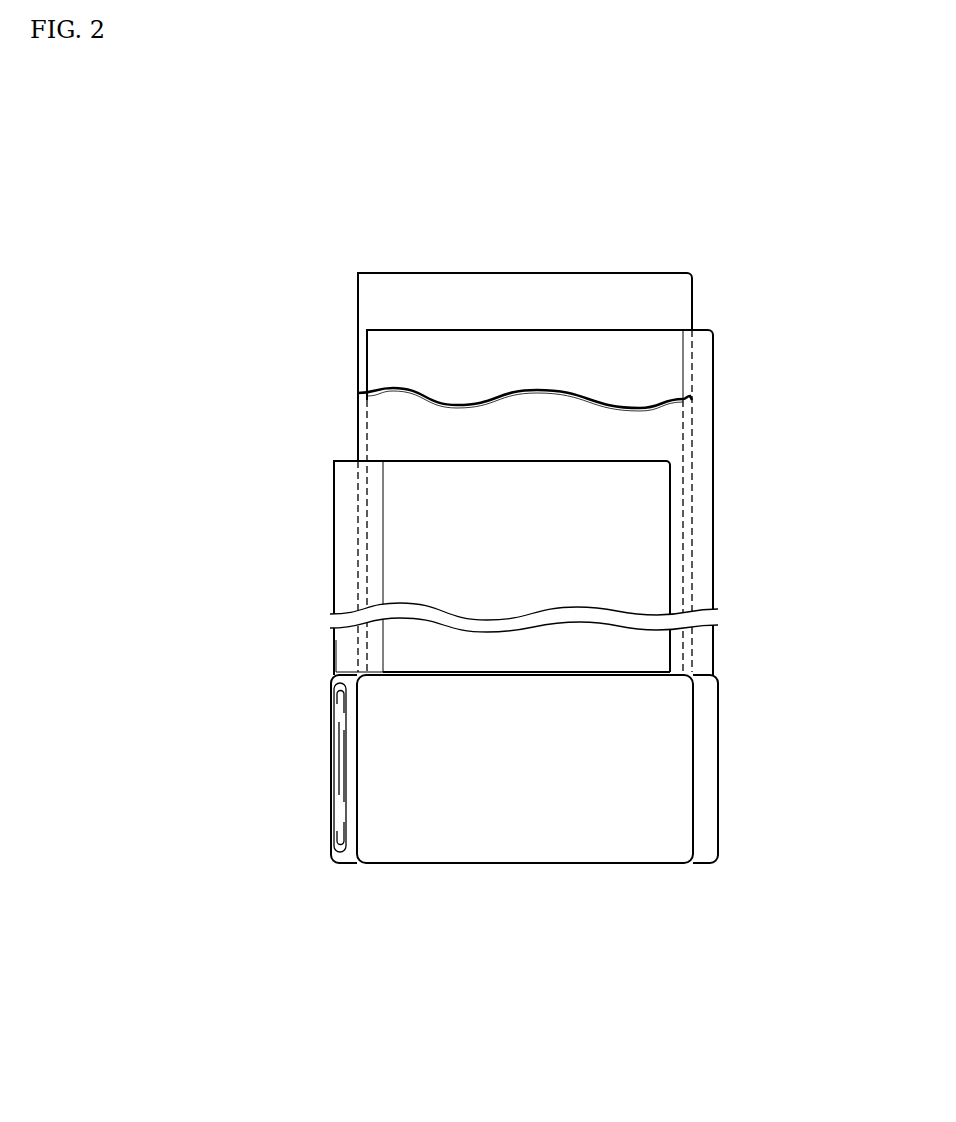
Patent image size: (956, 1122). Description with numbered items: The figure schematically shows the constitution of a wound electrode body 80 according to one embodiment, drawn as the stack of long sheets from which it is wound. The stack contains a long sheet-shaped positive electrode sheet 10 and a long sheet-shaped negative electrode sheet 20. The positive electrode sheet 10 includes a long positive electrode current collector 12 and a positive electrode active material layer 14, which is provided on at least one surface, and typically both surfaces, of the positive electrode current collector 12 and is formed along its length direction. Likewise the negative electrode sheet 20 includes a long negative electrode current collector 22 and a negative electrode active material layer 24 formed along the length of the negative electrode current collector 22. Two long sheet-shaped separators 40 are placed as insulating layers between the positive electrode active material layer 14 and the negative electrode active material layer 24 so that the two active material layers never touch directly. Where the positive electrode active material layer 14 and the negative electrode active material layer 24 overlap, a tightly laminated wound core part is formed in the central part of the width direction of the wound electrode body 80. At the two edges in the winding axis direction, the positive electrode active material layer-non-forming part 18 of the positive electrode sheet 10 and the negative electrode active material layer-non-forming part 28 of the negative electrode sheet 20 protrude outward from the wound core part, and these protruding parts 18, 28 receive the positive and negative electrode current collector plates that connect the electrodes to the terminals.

The positive electrode sheet 10 is at (451, 568).
The positive electrode current collector 12 is at (333, 598).
The positive electrode active material layer 14 is at (396, 481).
The positive electrode active material layer-non-forming part 18 is at (346, 646).
The negative electrode sheet 20 is at (589, 499).
The negative electrode current collector 22 is at (714, 508).
The negative electrode active material layer 24 is at (677, 354).
The negative electrode active material layer-non-forming part 28 is at (702, 576).
The separator 40 is at (378, 294).
The wound electrode body 80 is at (585, 842).